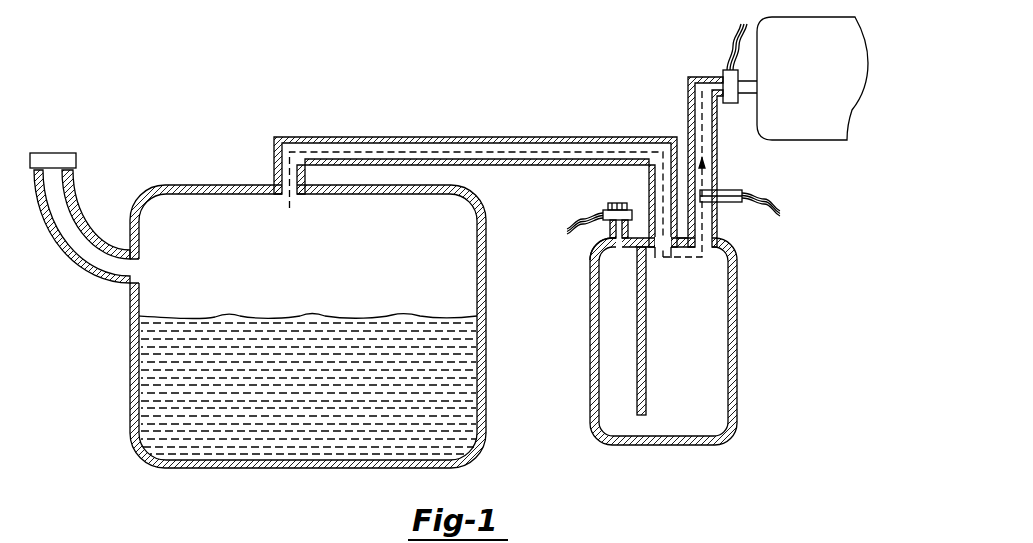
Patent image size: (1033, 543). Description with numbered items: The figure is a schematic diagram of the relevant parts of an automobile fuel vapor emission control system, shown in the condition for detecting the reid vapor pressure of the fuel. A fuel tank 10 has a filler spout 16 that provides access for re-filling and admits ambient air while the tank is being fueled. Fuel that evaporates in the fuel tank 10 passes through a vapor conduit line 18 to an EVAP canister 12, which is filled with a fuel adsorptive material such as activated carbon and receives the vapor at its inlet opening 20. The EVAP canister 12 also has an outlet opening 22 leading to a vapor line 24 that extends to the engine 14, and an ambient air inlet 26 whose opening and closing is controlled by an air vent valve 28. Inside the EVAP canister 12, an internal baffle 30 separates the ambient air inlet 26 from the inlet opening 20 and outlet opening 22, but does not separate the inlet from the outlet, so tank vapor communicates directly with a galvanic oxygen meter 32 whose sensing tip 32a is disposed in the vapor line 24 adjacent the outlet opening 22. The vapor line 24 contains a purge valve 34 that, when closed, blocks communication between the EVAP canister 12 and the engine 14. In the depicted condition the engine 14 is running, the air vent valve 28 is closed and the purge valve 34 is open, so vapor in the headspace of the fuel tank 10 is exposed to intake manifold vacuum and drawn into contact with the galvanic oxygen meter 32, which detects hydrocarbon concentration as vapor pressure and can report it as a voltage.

The fuel tank 10 is at (455, 396).
The EVAP canister 12 is at (715, 398).
The engine 14 is at (823, 128).
The filler spout 16 is at (62, 208).
The vapor conduit line 18 is at (460, 152).
The inlet opening 20 is at (657, 262).
The outlet opening 22 is at (698, 245).
The vapor line 24 is at (703, 128).
The ambient air inlet 26 is at (618, 249).
The air vent valve 28 is at (616, 204).
The internal baffle 30 is at (646, 380).
The galvanic oxygen meter 32 is at (733, 204).
The sensing tip 32a is at (720, 195).
The purge valve 34 is at (723, 80).